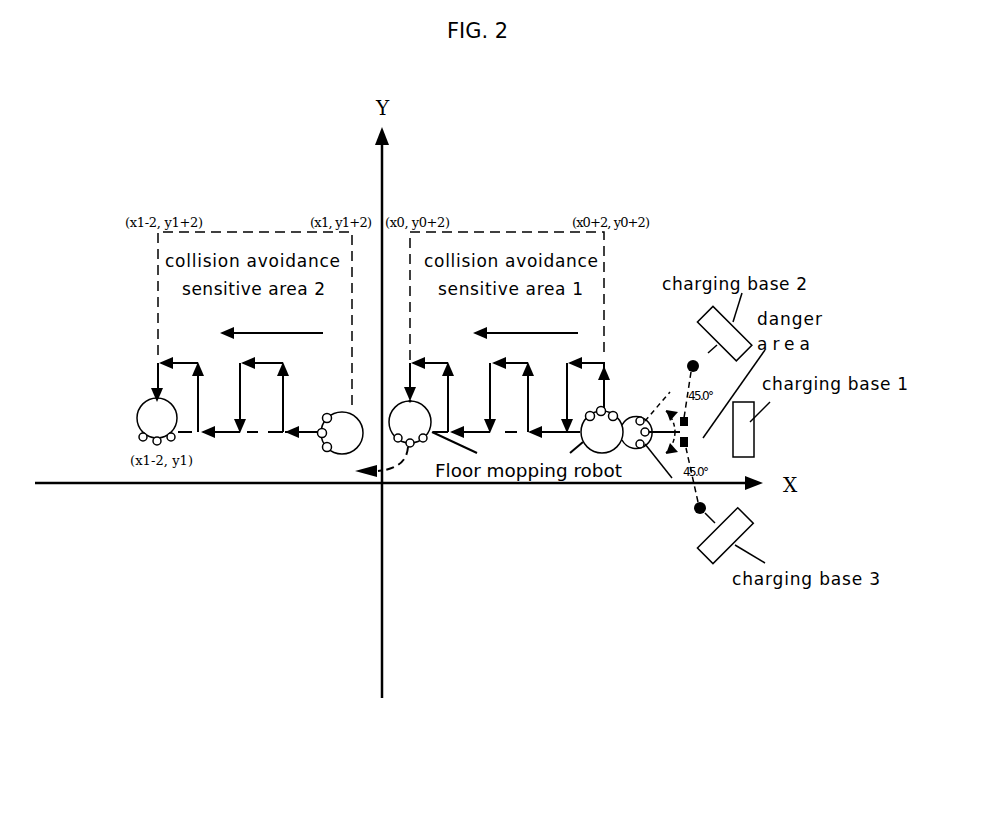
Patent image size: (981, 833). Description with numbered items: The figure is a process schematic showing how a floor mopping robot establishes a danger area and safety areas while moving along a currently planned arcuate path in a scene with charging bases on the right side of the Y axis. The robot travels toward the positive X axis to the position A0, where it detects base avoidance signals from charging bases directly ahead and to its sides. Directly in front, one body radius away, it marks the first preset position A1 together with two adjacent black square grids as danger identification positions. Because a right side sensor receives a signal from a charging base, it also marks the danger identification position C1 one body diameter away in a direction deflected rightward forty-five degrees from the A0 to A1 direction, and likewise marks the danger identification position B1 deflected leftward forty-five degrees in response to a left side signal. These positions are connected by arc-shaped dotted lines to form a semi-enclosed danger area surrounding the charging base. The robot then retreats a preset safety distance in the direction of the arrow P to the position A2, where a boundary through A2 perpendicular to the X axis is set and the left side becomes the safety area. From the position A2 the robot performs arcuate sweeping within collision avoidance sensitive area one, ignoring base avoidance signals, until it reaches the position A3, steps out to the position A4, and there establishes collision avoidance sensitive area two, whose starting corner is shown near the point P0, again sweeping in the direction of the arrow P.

The position A0 is at (637, 433).
The first preset position A1 is at (670, 432).
The position A2 is at (602, 430).
The position A3 is at (410, 424).
The position A4 is at (341, 433).
The danger identification position B1 is at (697, 381).
The danger identification position C1 is at (696, 485).
The start point P0 of collision avoidance sensitive area P0 is at (425, 392).
The arrow P is at (399, 333).